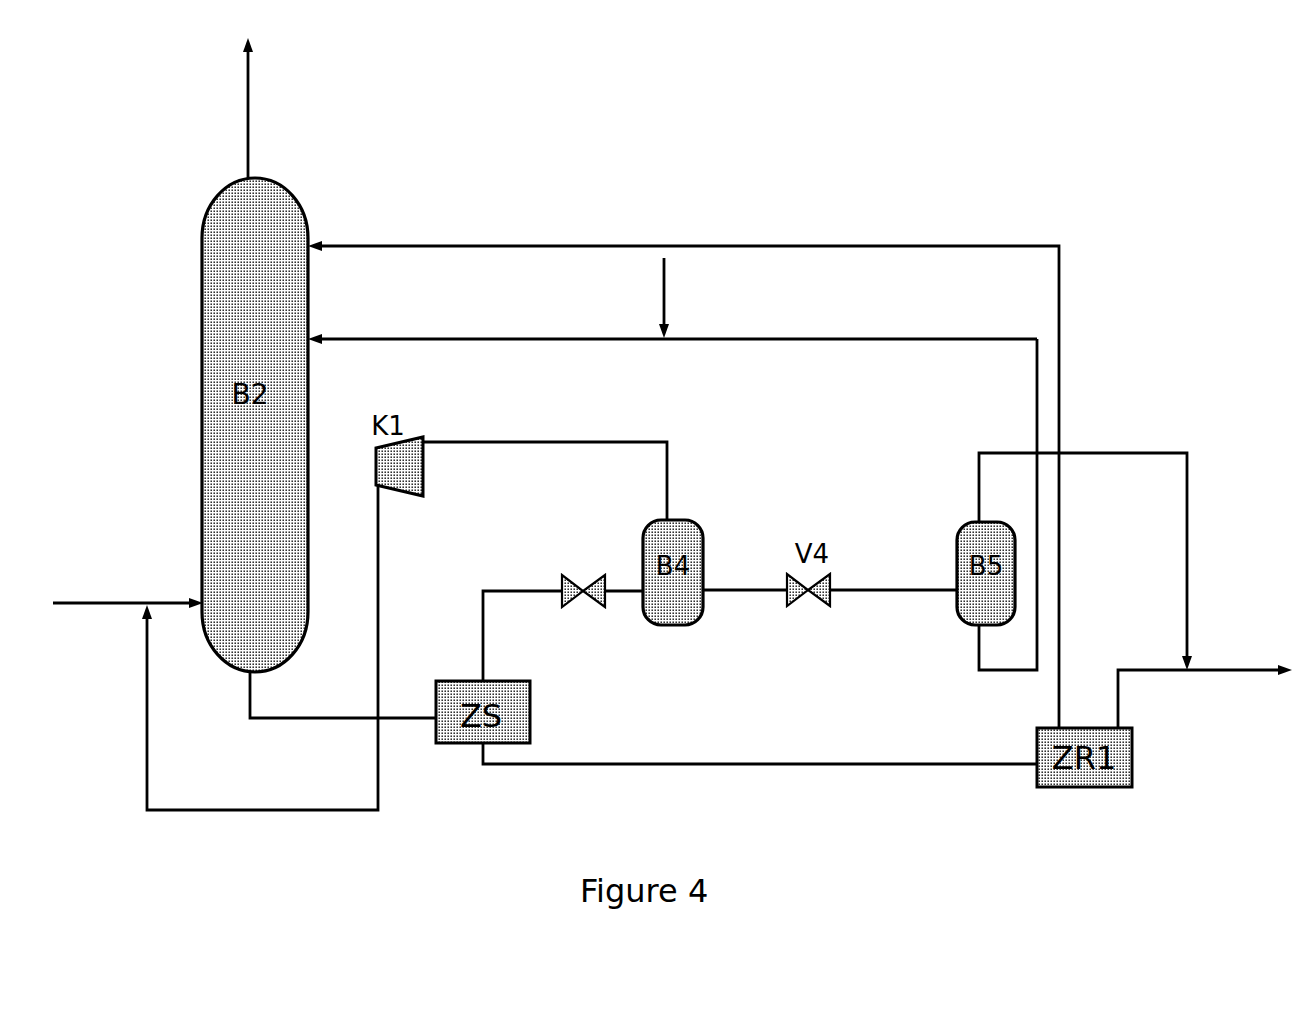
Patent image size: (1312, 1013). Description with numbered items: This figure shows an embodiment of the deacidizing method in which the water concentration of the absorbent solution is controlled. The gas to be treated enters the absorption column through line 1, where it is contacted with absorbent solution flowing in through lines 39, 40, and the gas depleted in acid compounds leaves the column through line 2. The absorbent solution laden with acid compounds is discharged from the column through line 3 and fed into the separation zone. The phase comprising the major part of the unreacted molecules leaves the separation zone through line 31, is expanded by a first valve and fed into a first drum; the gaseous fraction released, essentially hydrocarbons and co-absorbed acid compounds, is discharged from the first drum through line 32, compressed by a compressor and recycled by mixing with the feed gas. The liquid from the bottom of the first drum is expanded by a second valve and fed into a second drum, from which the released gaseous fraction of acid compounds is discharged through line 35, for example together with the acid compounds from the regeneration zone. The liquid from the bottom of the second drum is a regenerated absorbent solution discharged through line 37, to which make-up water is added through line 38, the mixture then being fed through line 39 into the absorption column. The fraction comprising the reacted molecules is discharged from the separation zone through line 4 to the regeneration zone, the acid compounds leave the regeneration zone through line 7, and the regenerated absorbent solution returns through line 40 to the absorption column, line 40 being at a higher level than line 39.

The line 1 is at (137, 603).
The line 2 is at (248, 143).
The line 3 is at (262, 718).
The line 4 is at (573, 764).
The line 7 is at (1122, 693).
The line 31 is at (470, 637).
The line 32 is at (617, 442).
The line 35 is at (1072, 453).
The line 37 is at (849, 338).
The line 38 is at (722, 292).
The line 39 is at (400, 339).
The line 40 is at (435, 246).